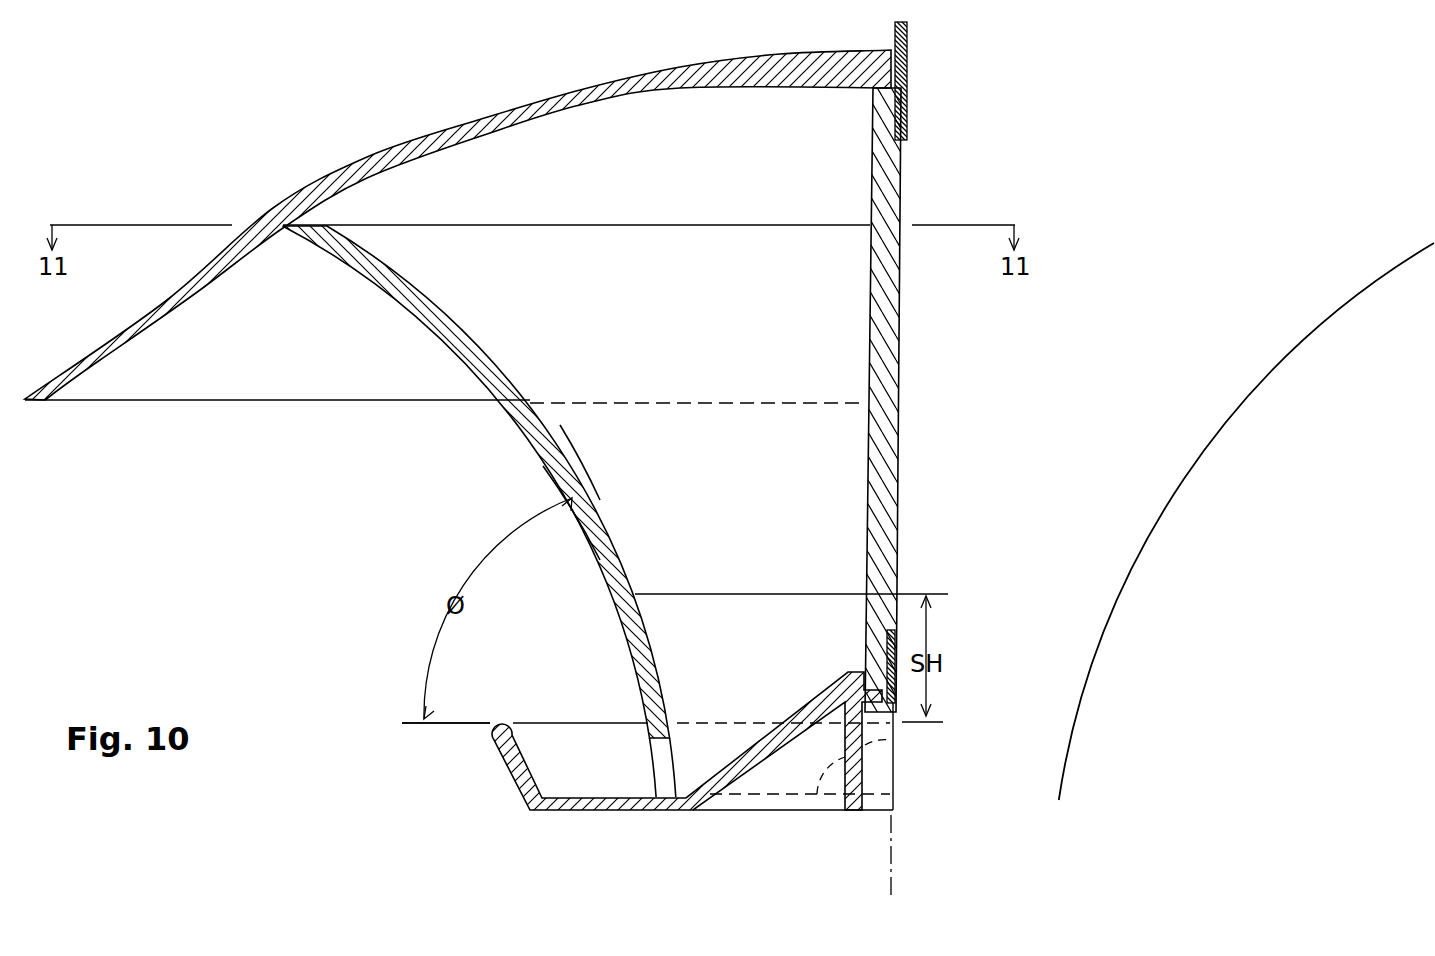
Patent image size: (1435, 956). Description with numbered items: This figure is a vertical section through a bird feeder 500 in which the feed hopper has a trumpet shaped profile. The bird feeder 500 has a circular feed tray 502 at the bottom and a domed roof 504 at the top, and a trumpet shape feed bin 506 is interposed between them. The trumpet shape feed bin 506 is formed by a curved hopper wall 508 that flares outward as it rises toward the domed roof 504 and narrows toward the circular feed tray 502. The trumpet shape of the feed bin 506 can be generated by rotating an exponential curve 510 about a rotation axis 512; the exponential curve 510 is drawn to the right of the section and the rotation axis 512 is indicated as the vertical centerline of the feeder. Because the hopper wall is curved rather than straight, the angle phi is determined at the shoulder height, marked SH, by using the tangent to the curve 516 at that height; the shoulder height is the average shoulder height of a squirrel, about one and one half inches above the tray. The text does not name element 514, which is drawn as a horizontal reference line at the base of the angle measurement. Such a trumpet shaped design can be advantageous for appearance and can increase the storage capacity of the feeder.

The bird feeder 500 is at (336, 540).
The circular feed tray 502 is at (474, 778).
The domed roof 504 is at (320, 151).
The trumpet shape feed bin 506 is at (499, 449).
The curved hopper wall 508 is at (543, 466).
The exponential curve 510 is at (1092, 655).
The rotation axis 512 is at (895, 857).
The reference plane 514 is at (406, 727).
The tangent to the curve 516 is at (560, 425).